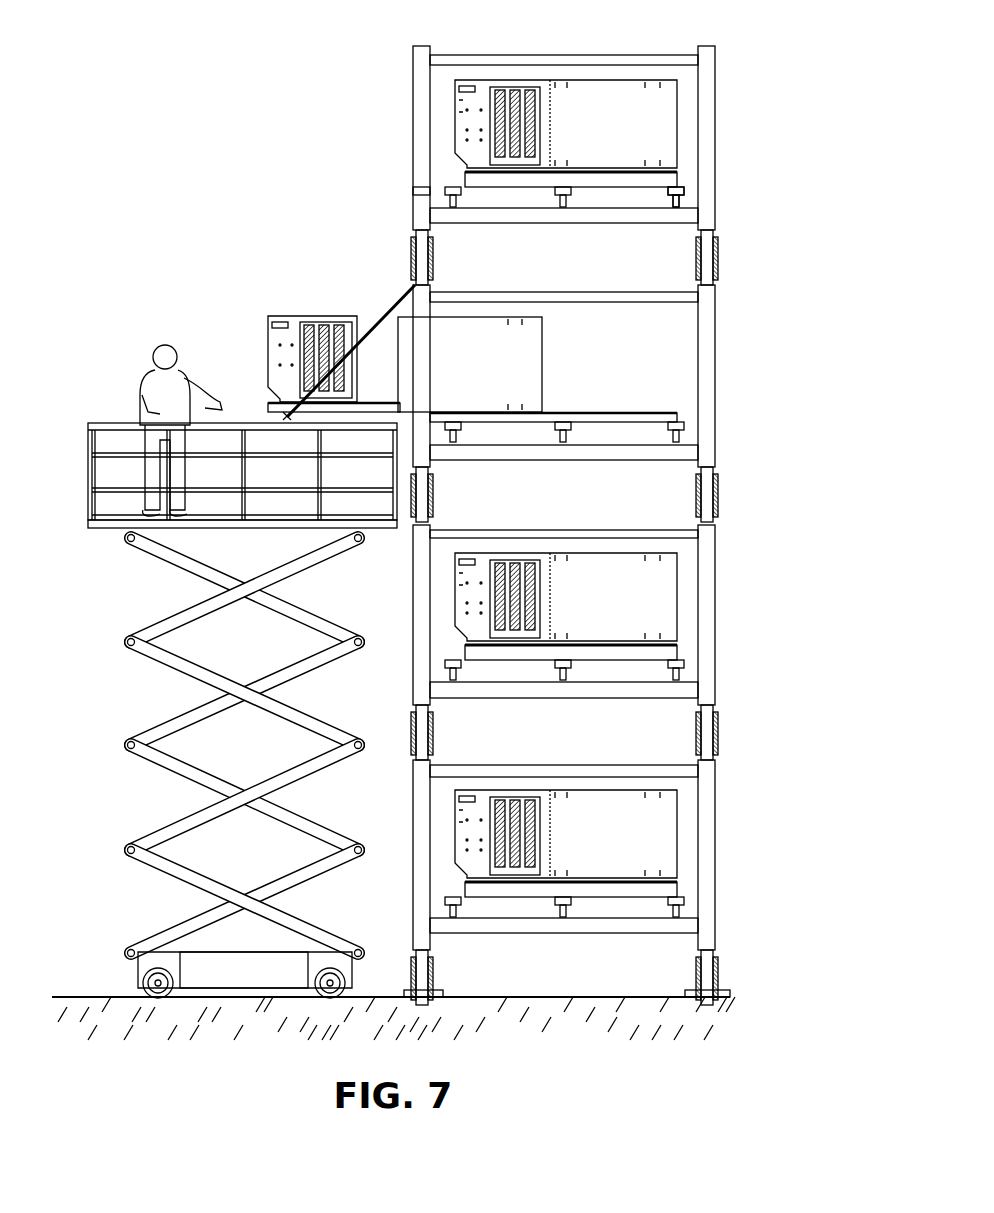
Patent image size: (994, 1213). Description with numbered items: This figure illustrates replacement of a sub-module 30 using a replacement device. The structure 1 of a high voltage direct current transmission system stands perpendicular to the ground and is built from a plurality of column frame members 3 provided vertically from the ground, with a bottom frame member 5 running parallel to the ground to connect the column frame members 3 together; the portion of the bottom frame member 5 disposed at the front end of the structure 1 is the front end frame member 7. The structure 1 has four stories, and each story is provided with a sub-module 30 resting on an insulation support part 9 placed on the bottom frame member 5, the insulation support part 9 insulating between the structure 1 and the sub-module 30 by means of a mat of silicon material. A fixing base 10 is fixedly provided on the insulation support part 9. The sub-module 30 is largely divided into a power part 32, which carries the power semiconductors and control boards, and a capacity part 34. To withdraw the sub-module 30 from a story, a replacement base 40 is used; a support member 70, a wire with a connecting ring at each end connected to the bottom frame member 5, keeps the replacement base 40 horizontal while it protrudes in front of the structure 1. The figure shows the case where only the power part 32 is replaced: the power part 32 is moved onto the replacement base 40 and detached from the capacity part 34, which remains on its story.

The structure 1 is at (572, 509).
The column frame members 3 is at (413, 82).
The bottom frame member 5 is at (700, 213).
The front end frame member 7 is at (413, 189).
The insulation support part 9 is at (688, 183).
The fixing base 10 is at (612, 413).
The sub-module 30 is at (442, 138).
The power part 32 is at (292, 316).
The capacity part 34 is at (487, 317).
The replacement base 40 is at (268, 420).
The support member 70 is at (370, 322).